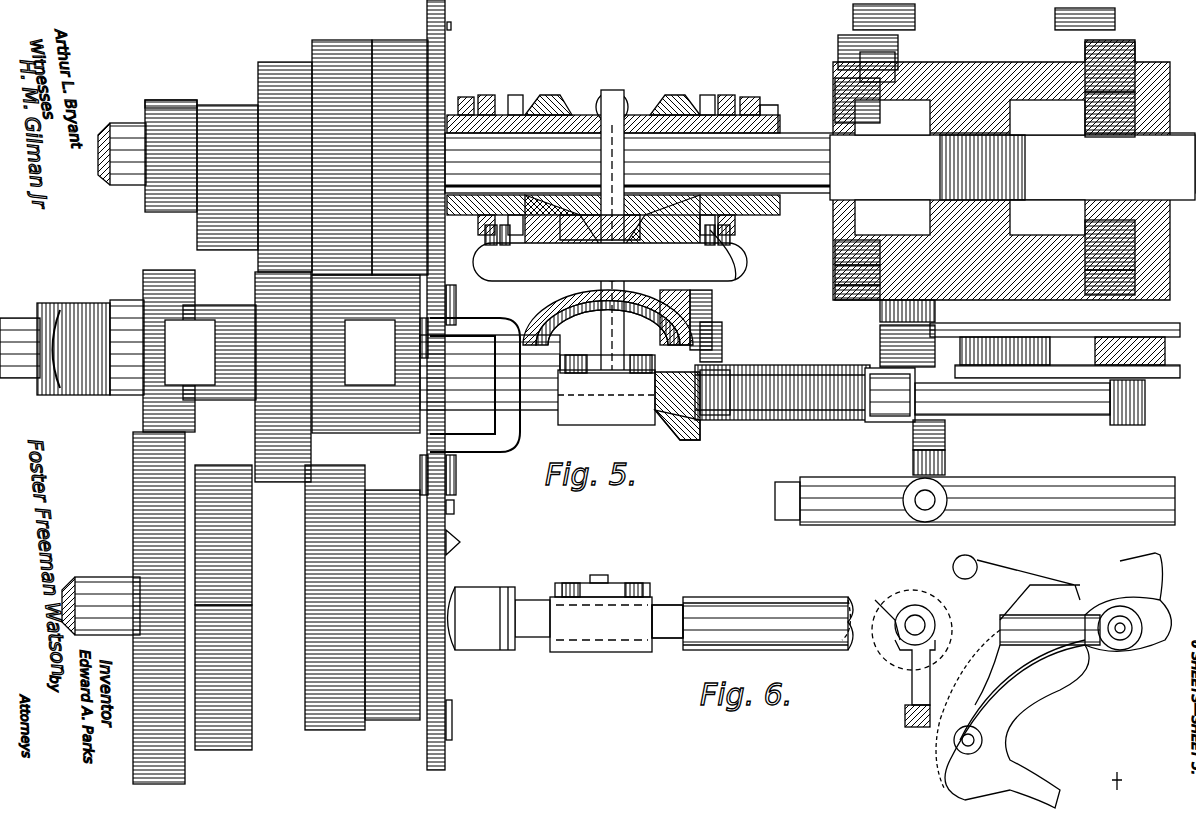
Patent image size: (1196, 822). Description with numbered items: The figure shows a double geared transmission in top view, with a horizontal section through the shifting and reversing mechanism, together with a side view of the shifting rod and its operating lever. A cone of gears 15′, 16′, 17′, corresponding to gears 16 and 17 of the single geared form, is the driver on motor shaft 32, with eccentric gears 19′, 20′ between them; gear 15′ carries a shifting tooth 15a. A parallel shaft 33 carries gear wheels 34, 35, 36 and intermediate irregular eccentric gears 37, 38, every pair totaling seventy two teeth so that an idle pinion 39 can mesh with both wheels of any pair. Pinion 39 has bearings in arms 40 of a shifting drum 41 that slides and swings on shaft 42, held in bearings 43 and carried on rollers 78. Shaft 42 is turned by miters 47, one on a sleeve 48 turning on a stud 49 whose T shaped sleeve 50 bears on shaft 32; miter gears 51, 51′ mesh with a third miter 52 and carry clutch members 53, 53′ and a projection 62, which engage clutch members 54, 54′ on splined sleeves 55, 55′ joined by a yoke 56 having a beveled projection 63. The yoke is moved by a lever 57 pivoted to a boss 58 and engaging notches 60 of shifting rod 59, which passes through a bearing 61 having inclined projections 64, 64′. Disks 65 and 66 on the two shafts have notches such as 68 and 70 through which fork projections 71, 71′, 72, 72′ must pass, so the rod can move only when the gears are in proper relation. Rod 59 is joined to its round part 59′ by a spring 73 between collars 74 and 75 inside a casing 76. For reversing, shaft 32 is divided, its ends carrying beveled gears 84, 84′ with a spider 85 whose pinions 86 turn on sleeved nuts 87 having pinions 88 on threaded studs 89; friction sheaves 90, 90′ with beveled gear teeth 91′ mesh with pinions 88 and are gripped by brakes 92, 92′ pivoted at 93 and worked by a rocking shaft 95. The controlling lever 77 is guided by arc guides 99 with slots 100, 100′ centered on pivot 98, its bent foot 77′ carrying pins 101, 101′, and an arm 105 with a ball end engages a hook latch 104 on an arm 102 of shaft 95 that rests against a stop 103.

In FIG. 5, the gear 15' is at (173, 136).
In FIG. 5, the shifting tooth 15a is at (166, 93).
In FIG. 5, the gear 16' is at (285, 153).
In FIG. 5, the gear 16 is at (271, 365).
In FIG. 5, the gear 17' is at (400, 143).
In FIG. 5, the gear 17 is at (425, 385).
In FIG. 5, the eccentric gear 19' is at (227, 161).
In FIG. 5, the eccentric gear 20' is at (342, 143).
In FIG. 5, the motor shaft 32 is at (125, 172).
In FIG. 5, the shaft 33 is at (90, 585).
In FIG. 5, the gear wheel 34 is at (175, 770).
In FIG. 5, the gear wheel 35 is at (273, 735).
In FIG. 5, the gear wheel 36 is at (395, 700).
In FIG. 5, the intermediate irregular eccentric gear 37 is at (218, 480).
In FIG. 5, the intermediate irregular eccentric gear 38 is at (335, 485).
In FIG. 5, the intermediate pinion 39 is at (255, 300).
In FIG. 5, the arm 40 is at (385, 340).
In FIG. 5, the shifting drum 41 is at (192, 300).
In FIG. 5, the shaft 42 is at (8, 330).
In FIG. 5, the bearing 43 is at (535, 330).
In FIG. 5, the miter gear 47 is at (712, 300).
In FIG. 5, the sleeve 48 is at (545, 298).
In FIG. 5, the stud 49 is at (650, 250).
In FIG. 5, the T shaped sleeve 50 is at (635, 130).
In FIG. 5, the miter gear 51 is at (562, 152).
In FIG. 5, the miter gear 51' is at (669, 149).
In FIG. 5, the miter gear 52 is at (738, 260).
In FIG. 5, the clutch member 53 is at (490, 166).
In FIG. 5, the clutch member 53' is at (745, 170).
In FIG. 5, the clutch member 54 is at (476, 155).
In FIG. 5, the clutch member 54' is at (754, 148).
In FIG. 5, the sleeve 55 is at (467, 88).
In FIG. 5, the sleeve 55' is at (760, 101).
In FIG. 5, the yoke 56 is at (610, 262).
In FIG. 5, the lever 57 is at (612, 255).
In FIG. 5, the boss 58 is at (619, 93).
In FIG. 5, the shifting rod 59 is at (677, 404).
In FIG. 6, the shifting rod 59 is at (678, 605).
In FIG. 5, the shifting rod part 59' is at (1012, 501).
In FIG. 5, the notch 60 is at (605, 395).
In FIG. 6, the notch 60 is at (610, 588).
In FIG. 5, the bearing 61 is at (645, 400).
In FIG. 6, the bearing 61 is at (612, 645).
In FIG. 5, the projection 62 is at (508, 245).
In FIG. 5, the beveled projection 63 is at (614, 250).
In FIG. 5, the inclined projection 64 is at (590, 389).
In FIG. 6, the inclined projection 64 is at (574, 572).
In FIG. 5, the inclined projection 64' is at (732, 342).
In FIG. 6, the inclined projection 64' is at (657, 576).
In FIG. 5, the disk 65 is at (447, 25).
In FIG. 5, the disk 66 is at (445, 515).
In FIG. 5, the notch 68 is at (462, 543).
In FIG. 5, the notch 70 is at (440, 716).
In FIG. 5, the projection 71 is at (408, 329).
In FIG. 5, the projection 71' is at (468, 305).
In FIG. 5, the projection 72 is at (406, 475).
In FIG. 5, the projection 72' is at (468, 473).
In FIG. 5, the spring 73 is at (775, 415).
In FIG. 5, the collar 74 is at (677, 416).
In FIG. 5, the collar 75 is at (868, 372).
In FIG. 5, the casing 76 is at (722, 418).
In FIG. 6, the casing 76 is at (760, 612).
In FIG. 5, the shifting lever 77 is at (1108, 462).
In FIG. 5, the bent foot 77' is at (1022, 690).
In FIG. 5, the roller 78 is at (62, 315).
In FIG. 5, the beveled gear 84 is at (842, 92).
In FIG. 5, the beveled gear 84' is at (1128, 88).
In FIG. 5, the spider 85 is at (968, 50).
In FIG. 5, the pinion 86 is at (840, 255).
In FIG. 5, the sleeved nut 87 is at (840, 275).
In FIG. 5, the pinion 88 is at (840, 295).
In FIG. 5, the threaded stud 89 is at (1125, 290).
In FIG. 5, the friction sheave 90 is at (851, 48).
In FIG. 5, the friction sheave 90' is at (1132, 54).
In FIG. 5, the bearing 91' is at (987, 160).
In FIG. 5, the brake 92 is at (886, 316).
In FIG. 5, the brake 92' is at (1127, 414).
In FIG. 5, the pivot 93 is at (853, 13).
In FIG. 5, the rocking shaft 95 is at (1000, 495).
In FIG. 5, the pivot 98 is at (1112, 776).
In FIG. 5, the arc guide 99 is at (1150, 332).
In FIG. 5, the arc slot 100 is at (1138, 645).
In FIG. 5, the arc slot 100' is at (995, 718).
In FIG. 5, the pin 101 is at (1118, 657).
In FIG. 5, the pin 101' is at (1004, 743).
In FIG. 5, the arm 102 is at (945, 428).
In FIG. 5, the stop 103 is at (948, 462).
In FIG. 5, the hook latch 104 is at (880, 342).
In FIG. 5, the arm 105 is at (1000, 570).